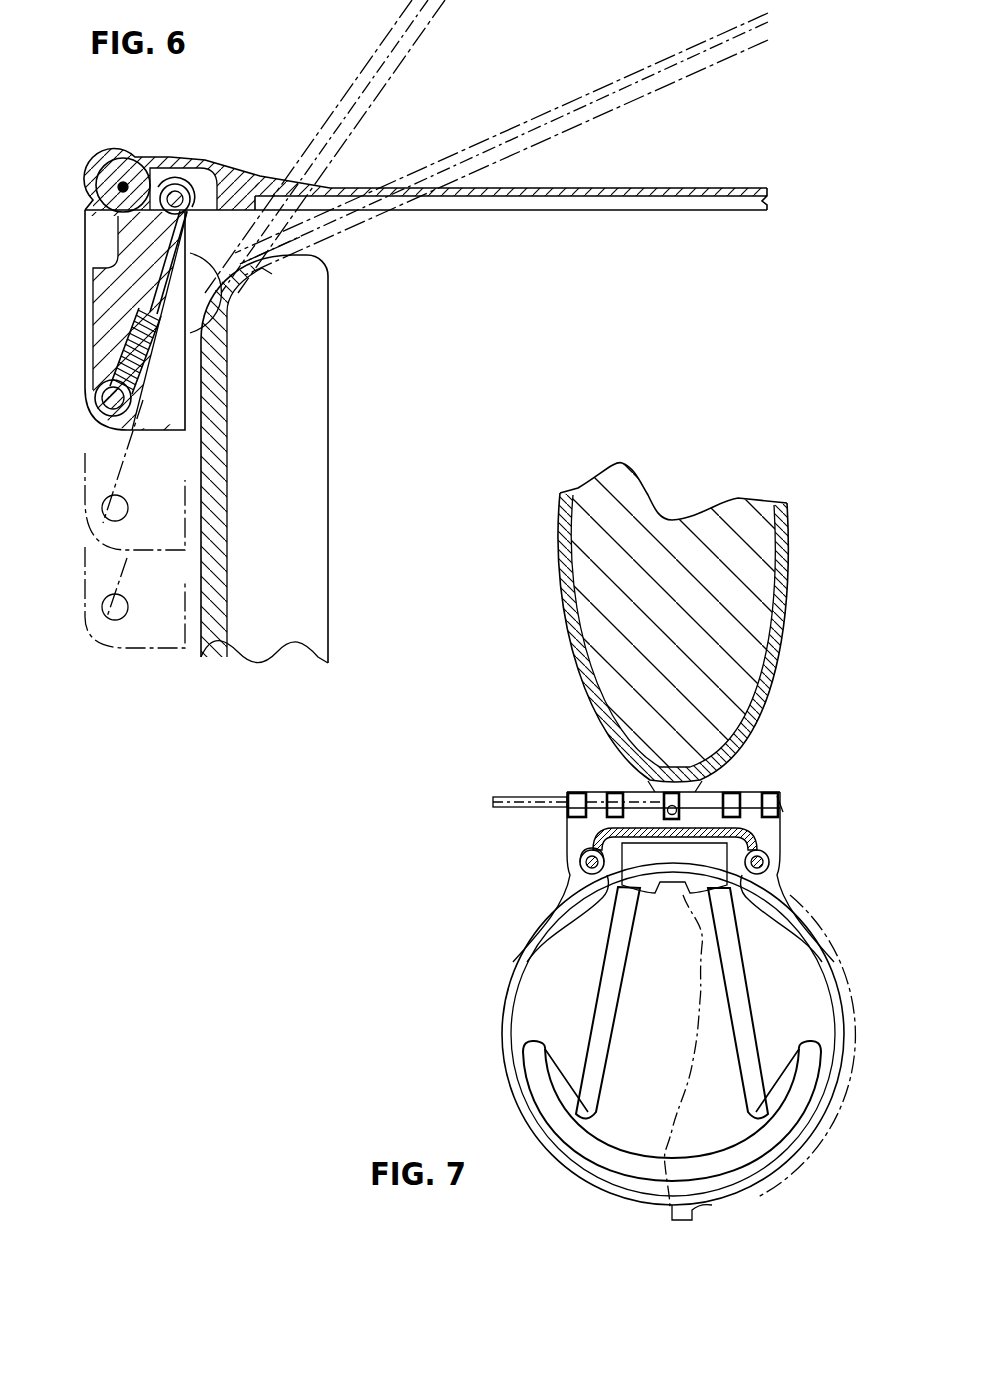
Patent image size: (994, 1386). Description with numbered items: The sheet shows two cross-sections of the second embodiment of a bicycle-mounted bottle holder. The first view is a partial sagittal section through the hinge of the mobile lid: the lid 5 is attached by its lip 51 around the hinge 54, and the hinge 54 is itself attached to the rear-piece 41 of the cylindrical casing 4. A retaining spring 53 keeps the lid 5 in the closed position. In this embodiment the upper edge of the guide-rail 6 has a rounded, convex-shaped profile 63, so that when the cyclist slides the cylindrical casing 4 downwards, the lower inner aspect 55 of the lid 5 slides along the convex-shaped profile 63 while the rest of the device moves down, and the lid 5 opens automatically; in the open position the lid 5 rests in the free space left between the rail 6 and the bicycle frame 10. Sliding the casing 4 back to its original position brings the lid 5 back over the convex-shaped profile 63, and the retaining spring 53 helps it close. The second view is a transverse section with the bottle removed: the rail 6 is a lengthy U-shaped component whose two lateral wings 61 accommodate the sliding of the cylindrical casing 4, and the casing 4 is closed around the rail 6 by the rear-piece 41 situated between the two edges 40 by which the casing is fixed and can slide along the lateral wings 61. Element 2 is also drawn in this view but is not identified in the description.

In FIG. 7, the support arm 2 is at (604, 1013).
In FIG. 7, the cylindrical casing 4 is at (506, 1023).
In FIG. 6, the lid 5 is at (420, 30).
In FIG. 7, the lid 5 is at (506, 802).
In FIG. 6, the rail 6 is at (296, 450).
In FIG. 7, the rail 6 is at (752, 843).
In FIG. 7, the bicycle frame 10 is at (780, 590).
In FIG. 7, the edges 40 is at (580, 864).
In FIG. 6, the rear-piece 41 is at (125, 247).
In FIG. 7, the rear-piece 41 is at (750, 815).
In FIG. 6, the lip 51 is at (177, 156).
In FIG. 6, the retaining spring 53 is at (122, 318).
In FIG. 6, the hinge 54 is at (118, 184).
In FIG. 7, the hinge 54 is at (786, 805).
In FIG. 6, the lower inner aspect 55 is at (350, 228).
In FIG. 7, the lateral wings 61 is at (594, 855).
In FIG. 6, the convex-shaped profile 63 is at (272, 274).